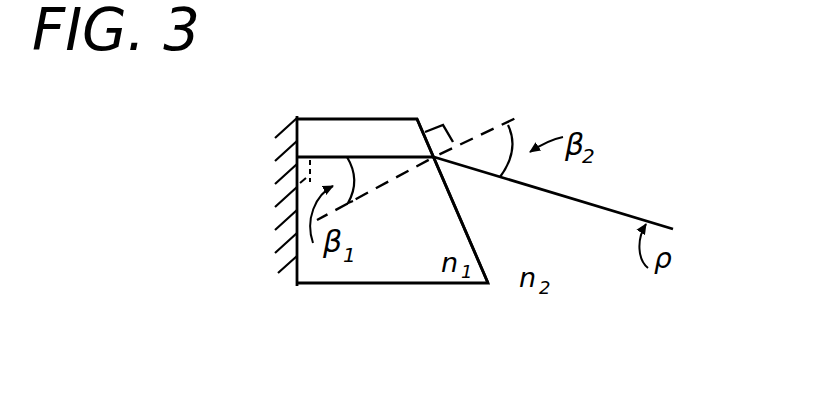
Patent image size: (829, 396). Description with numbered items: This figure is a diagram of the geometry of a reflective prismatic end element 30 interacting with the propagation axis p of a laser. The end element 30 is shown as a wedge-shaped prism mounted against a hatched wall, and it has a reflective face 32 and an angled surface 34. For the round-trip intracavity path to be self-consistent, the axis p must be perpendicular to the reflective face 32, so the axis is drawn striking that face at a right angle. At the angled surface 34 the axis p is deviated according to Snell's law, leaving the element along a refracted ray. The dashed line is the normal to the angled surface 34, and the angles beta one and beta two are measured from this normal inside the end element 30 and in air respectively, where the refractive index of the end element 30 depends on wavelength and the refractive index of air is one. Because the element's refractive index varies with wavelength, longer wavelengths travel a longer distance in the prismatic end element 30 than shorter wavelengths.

The reflective prismatic end element 30 is at (313, 262).
The reflective face 32 is at (303, 133).
The angled surface 34 is at (459, 210).